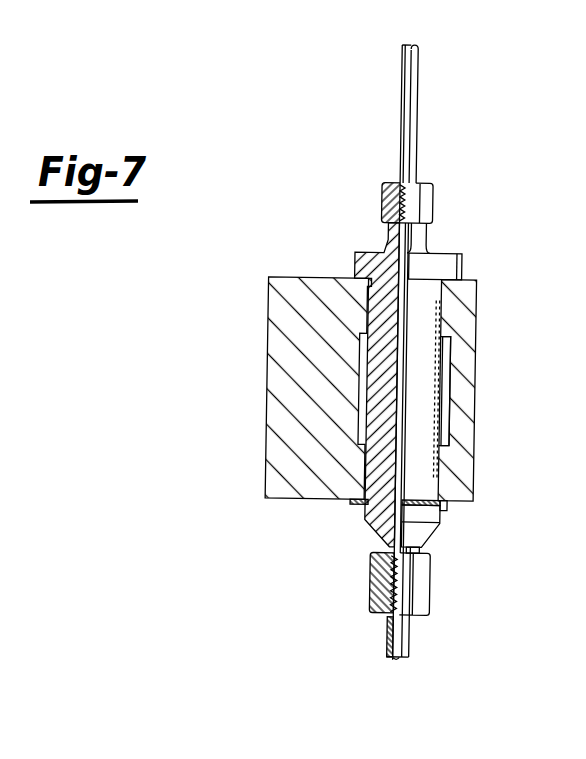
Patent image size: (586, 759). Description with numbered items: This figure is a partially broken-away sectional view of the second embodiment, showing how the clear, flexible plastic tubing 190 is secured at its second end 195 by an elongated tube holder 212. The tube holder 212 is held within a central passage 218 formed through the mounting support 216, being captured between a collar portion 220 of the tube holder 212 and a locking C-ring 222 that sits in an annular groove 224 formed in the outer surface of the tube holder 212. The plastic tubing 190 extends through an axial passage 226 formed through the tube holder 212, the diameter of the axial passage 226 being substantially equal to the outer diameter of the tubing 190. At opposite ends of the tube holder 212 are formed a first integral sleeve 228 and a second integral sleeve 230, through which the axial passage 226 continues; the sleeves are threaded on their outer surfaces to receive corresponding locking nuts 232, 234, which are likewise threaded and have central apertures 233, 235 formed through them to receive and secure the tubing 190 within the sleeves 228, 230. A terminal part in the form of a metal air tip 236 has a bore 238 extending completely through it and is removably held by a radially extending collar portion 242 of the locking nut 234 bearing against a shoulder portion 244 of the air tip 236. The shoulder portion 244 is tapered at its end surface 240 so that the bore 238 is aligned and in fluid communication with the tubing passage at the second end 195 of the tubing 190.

The plastic tubing 190 is at (423, 122).
The second end of the tubing 195 is at (362, 603).
The tube holder 212 is at (465, 251).
The mounting support 216 is at (477, 341).
The central passage 218 is at (432, 479).
The collar portion 220 is at (458, 261).
The locking C-ring 222 is at (450, 507).
The annular groove 224 is at (365, 502).
The axial passage 226 is at (399, 361).
The first integral sleeve 228 is at (388, 230).
The second integral sleeve 230 is at (383, 579).
The locking nut 232 is at (433, 204).
The central aperture 233 is at (402, 186).
The locking nut 234 is at (432, 603).
The central aperture 235 is at (397, 561).
The air tip 236 is at (388, 632).
The bore 238 is at (400, 663).
The end surface 240 is at (370, 598).
The radially extending collar portion 242 is at (383, 618).
The shoulder portion 244 is at (383, 607).